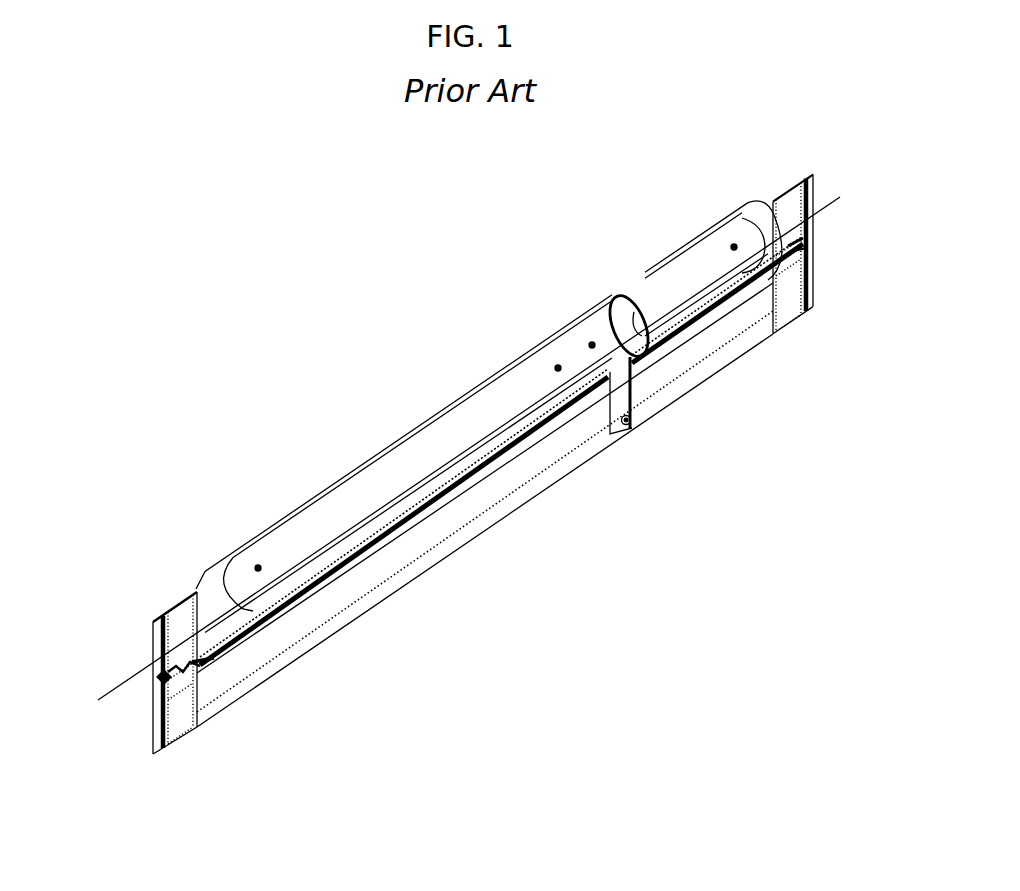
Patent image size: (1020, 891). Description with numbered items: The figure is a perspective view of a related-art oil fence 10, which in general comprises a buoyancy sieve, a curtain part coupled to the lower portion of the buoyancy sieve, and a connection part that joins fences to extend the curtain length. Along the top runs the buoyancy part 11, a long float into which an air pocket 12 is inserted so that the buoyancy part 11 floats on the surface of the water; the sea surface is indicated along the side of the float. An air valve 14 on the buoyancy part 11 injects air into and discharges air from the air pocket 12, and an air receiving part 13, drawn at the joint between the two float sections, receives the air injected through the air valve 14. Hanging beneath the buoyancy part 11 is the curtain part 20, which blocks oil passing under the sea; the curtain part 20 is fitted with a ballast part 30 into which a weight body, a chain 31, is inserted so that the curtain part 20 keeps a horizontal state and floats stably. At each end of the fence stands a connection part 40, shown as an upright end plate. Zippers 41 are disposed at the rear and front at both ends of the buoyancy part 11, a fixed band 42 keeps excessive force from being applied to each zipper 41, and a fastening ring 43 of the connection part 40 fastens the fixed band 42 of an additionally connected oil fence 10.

The oil fence 10 is at (515, 578).
The buoyancy part 11 is at (440, 417).
The air pocket 12 is at (332, 489).
The air receiving part 13 is at (652, 328).
The air valve 14 is at (592, 342).
The curtain part 20 is at (337, 582).
The ballast part 30 is at (549, 486).
The chain 31 is at (633, 436).
The connection part 40 is at (217, 594).
The zipper 41 is at (154, 630).
The fixed band 42 is at (192, 660).
The fastening ring 43 is at (157, 668).